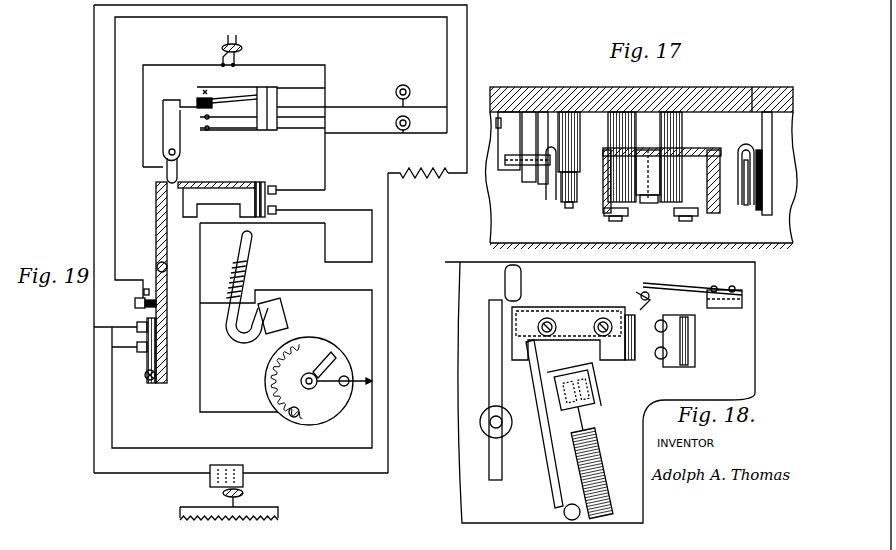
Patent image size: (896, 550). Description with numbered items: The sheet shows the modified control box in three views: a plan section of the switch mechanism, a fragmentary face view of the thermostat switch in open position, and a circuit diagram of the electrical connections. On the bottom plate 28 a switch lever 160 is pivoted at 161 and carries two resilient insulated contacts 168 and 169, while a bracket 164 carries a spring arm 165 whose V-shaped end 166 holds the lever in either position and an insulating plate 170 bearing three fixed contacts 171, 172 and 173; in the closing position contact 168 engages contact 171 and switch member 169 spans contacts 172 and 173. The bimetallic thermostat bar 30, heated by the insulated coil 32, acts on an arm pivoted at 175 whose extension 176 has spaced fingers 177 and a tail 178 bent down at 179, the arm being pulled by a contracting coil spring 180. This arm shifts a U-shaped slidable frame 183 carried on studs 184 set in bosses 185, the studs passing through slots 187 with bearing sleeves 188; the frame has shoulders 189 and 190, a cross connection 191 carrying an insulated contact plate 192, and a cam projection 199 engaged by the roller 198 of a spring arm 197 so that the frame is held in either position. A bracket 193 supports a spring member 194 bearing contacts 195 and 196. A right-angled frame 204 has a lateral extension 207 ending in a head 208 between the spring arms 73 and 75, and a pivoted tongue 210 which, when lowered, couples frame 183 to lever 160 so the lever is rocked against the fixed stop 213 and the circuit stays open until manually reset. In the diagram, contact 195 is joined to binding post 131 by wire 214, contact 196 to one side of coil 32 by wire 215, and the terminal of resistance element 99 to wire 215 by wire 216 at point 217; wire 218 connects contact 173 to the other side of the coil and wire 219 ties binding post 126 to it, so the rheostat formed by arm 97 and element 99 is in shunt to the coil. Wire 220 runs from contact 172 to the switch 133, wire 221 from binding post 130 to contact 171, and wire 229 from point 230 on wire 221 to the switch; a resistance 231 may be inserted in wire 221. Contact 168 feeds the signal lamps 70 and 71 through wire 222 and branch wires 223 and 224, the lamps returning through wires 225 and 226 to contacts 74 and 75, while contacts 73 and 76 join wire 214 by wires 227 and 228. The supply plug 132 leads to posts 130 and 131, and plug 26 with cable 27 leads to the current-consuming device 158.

In FIG. 19, the plug 26 is at (221, 493).
In FIG. 19, the cable 27 is at (264, 507).
In FIG. 17, the bottom plate 28 is at (712, 103).
In FIG. 18, the bottom plate 28 is at (755, 361).
In FIG. 19, the thermostat bar 30 is at (246, 350).
In FIG. 18, the thermostat bar 30 is at (592, 418).
In FIG. 19, the heating coil 32 is at (252, 272).
In FIG. 18, the heating coil 32 is at (598, 474).
In FIG. 19, the signal lamp 70 is at (410, 123).
In FIG. 19, the signal lamp 71 is at (410, 92).
In FIG. 19, the switch contact 73 is at (244, 125).
In FIG. 19, the switch contact 74 is at (258, 131).
In FIG. 19, the switch contact 75 is at (262, 95).
In FIG. 19, the switch contact 76 is at (239, 91).
In FIG. 19, the rheostat arm 97 is at (336, 358).
In FIG. 19, the resistance element 99 is at (312, 338).
In FIG. 19, the binding post 126 is at (344, 387).
In FIG. 19, the binding post 130 is at (221, 64).
In FIG. 19, the binding post 131 is at (236, 63).
In FIG. 19, the plug 132 is at (224, 42).
In FIG. 19, the switch 133 is at (222, 466).
In FIG. 19, the current-consuming device 158 is at (280, 519).
In FIG. 19, the switch lever 160 is at (156, 193).
In FIG. 17, the switch lever 160 is at (571, 206).
In FIG. 18, the switch lever 160 is at (489, 451).
In FIG. 19, the pivot 161 is at (157, 268).
In FIG. 18, the pivot 161 is at (490, 422).
In FIG. 17, the bracket 164 is at (506, 111).
In FIG. 17, the spring arm 165 is at (545, 112).
In FIG. 17, the V-shaped end 166 is at (578, 166).
In FIG. 19, the insulated contact 168 is at (144, 292).
In FIG. 17, the insulated contact 168 is at (551, 200).
In FIG. 19, the switch member 169 is at (158, 362).
In FIG. 17, the insulating plate 170 is at (540, 150).
In FIG. 19, the fixed contact 171 is at (135, 305).
In FIG. 17, the fixed contact 171 is at (537, 186).
In FIG. 19, the fixed contact 172 is at (94, 327).
In FIG. 19, the fixed contact 173 is at (134, 358).
In FIG. 17, the pivot 175 is at (650, 205).
In FIG. 18, the pivot 175 is at (564, 513).
In FIG. 18, the extension 176 is at (540, 432).
In FIG. 18, the spaced fingers 177 is at (538, 347).
In FIG. 18, the tail 178 is at (574, 389).
In FIG. 18, the bend 179 is at (606, 383).
In FIG. 18, the contracting coil spring 180 is at (556, 500).
In FIG. 19, the slidable frame 183 is at (216, 193).
In FIG. 18, the slidable frame 183 is at (576, 298).
In FIG. 17, the studs 184 is at (614, 220).
In FIG. 17, the bosses 185 is at (626, 112).
In FIG. 17, the slots 187 is at (651, 150).
In FIG. 17, the bearing sleeves 188 is at (607, 148).
In FIG. 18, the shoulder 189 is at (622, 356).
In FIG. 18, the shoulder 190 is at (530, 350).
In FIG. 17, the cross connection 191 is at (743, 150).
In FIG. 18, the cross connection 191 is at (621, 352).
In FIG. 19, the contact plate 192 is at (265, 186).
In FIG. 17, the contact plate 192 is at (757, 101).
In FIG. 18, the contact plate 192 is at (680, 297).
In FIG. 17, the bracket 193 is at (767, 216).
In FIG. 18, the bracket 193 is at (690, 343).
In FIG. 17, the spring member 194 is at (746, 206).
In FIG. 18, the spring member 194 is at (700, 370).
In FIG. 19, the switch contact 195 is at (278, 190).
In FIG. 18, the switch contact 195 is at (703, 287).
In FIG. 19, the switch contact 196 is at (278, 210).
In FIG. 17, the switch contact 196 is at (758, 212).
In FIG. 18, the switch contact 196 is at (671, 368).
In FIG. 18, the spring arm 197 is at (700, 287).
In FIG. 18, the roller 198 is at (640, 292).
In FIG. 18, the cam projection 199 is at (636, 297).
In FIG. 19, the right-angled frame 204 is at (168, 131).
In FIG. 19, the lateral extension 207 is at (181, 86).
In FIG. 19, the head 208 is at (199, 110).
In FIG. 19, the tongue 210 is at (167, 166).
In FIG. 18, the tongue 210 is at (522, 276).
In FIG. 17, the fixed stop 213 is at (621, 125).
In FIG. 19, the wire 214 is at (312, 66).
In FIG. 19, the wire 215 is at (372, 240).
In FIG. 19, the wire 216 is at (200, 248).
In FIG. 19, the point 217 is at (264, 239).
In FIG. 19, the wire 218 is at (368, 290).
In FIG. 19, the wire 219 is at (372, 384).
In FIG. 19, the wire 220 is at (116, 474).
In FIG. 19, the wire 221 is at (94, 37).
In FIG. 19, the wire 222 is at (115, 41).
In FIG. 19, the branch wire 223 is at (437, 135).
In FIG. 19, the branch wire 224 is at (440, 133).
In FIG. 19, the wire 225 is at (356, 133).
In FIG. 19, the wire 226 is at (345, 107).
In FIG. 19, the wire 227 is at (297, 118).
In FIG. 19, the wire 228 is at (298, 88).
In FIG. 19, the wire 229 is at (388, 256).
In FIG. 19, the point 230 is at (397, 172).
In FIG. 19, the resistance 231 is at (426, 180).